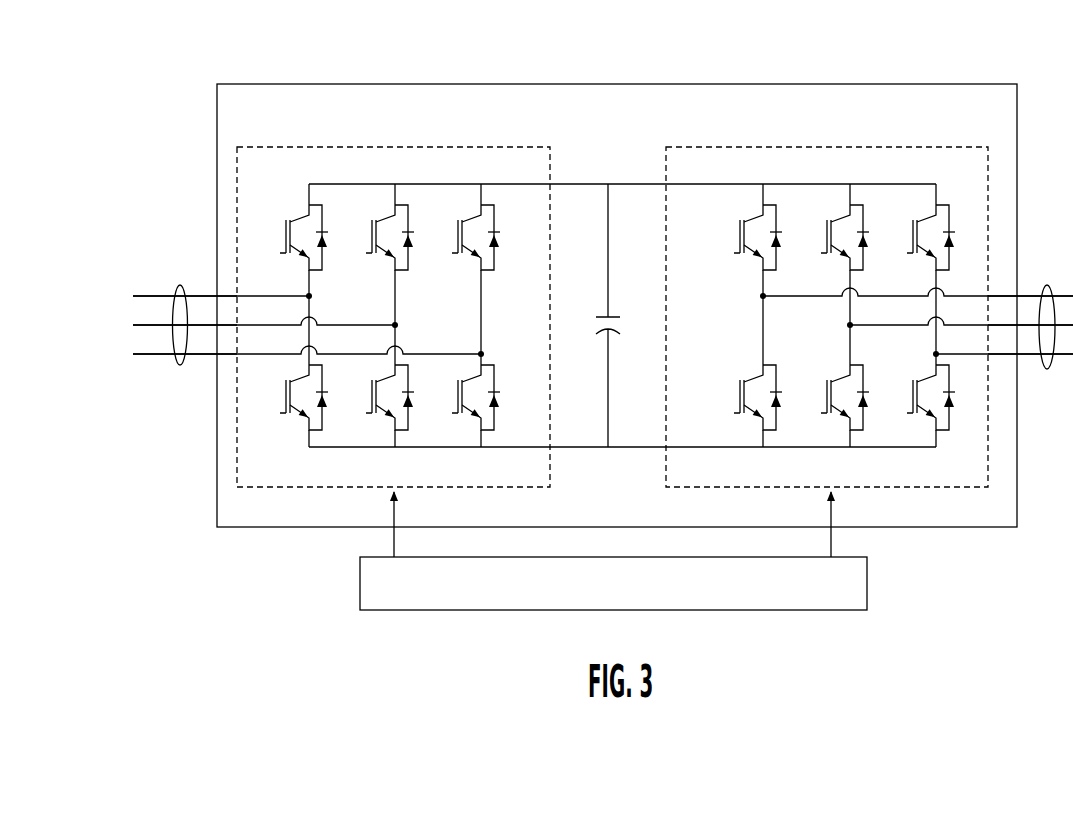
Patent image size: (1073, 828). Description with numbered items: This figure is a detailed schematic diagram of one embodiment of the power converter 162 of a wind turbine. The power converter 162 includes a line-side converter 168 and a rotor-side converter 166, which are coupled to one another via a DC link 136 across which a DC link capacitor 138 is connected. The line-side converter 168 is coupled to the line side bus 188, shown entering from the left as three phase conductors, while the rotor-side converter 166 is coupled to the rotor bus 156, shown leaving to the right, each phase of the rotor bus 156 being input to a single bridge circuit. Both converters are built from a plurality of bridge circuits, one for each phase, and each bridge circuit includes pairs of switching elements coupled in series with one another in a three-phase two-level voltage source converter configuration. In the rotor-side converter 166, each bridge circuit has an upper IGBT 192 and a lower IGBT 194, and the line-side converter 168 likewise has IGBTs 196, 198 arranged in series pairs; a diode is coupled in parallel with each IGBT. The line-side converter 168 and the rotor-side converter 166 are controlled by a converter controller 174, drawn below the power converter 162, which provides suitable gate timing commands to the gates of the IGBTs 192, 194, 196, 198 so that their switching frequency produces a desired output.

The power converter 162 is at (690, 84).
The line-side converter 168 is at (380, 147).
The rotor-side converter 166 is at (887, 147).
The DC link 136 is at (600, 183).
The DC link capacitor 138 is at (613, 313).
The IGBT 192 is at (748, 252).
The IGBT 194 is at (752, 413).
The IGBT 196 is at (292, 209).
The IGBT 198 is at (273, 421).
The line side bus 188 is at (180, 285).
The rotor bus 156 is at (1047, 285).
The converter controller 174 is at (868, 585).